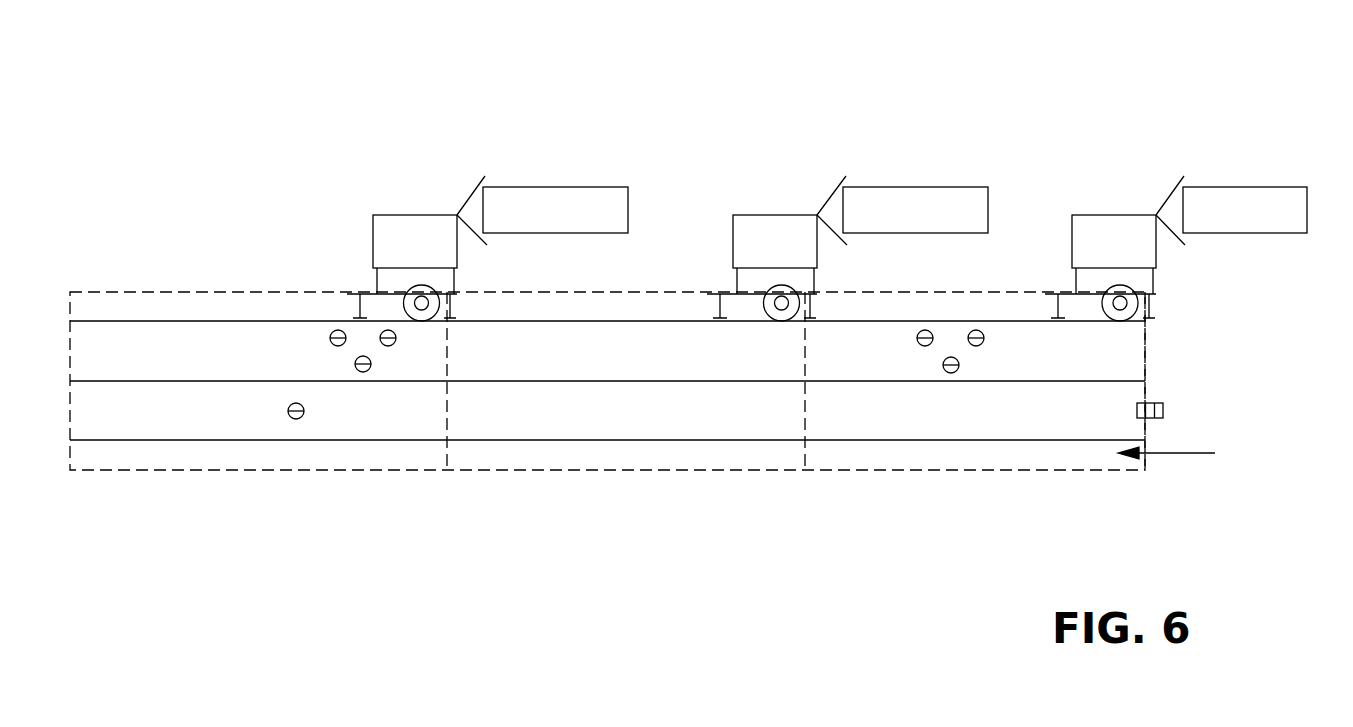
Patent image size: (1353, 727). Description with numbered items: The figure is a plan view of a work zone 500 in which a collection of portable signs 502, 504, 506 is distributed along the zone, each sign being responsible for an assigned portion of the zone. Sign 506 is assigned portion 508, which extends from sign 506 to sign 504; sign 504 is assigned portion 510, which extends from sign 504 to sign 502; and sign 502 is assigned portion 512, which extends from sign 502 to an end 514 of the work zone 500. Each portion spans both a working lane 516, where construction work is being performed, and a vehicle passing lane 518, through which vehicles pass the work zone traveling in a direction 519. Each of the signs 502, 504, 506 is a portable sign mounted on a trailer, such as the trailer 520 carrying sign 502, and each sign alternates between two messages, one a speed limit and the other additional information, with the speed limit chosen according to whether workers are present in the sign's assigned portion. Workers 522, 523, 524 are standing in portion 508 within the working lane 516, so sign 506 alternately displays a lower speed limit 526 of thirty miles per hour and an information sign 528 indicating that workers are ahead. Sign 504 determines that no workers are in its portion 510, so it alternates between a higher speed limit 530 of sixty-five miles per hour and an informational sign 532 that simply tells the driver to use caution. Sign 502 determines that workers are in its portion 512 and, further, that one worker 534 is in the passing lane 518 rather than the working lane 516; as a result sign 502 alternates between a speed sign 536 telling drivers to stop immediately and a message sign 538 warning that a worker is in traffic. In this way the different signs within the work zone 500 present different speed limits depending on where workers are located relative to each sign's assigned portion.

The work zone 500 is at (1087, 92).
The sign 502 is at (402, 212).
The sign 504 is at (768, 212).
The sign 506 is at (1100, 212).
The portion 508 is at (958, 465).
The portion 510 is at (635, 465).
The portion 512 is at (265, 457).
The end of work zone 514 is at (82, 292).
The working lane 516 is at (1153, 338).
The vehicle passing lane 518 is at (1145, 398).
The direction 519 is at (1165, 457).
The trailer 520 is at (347, 297).
The worker 522 is at (987, 338).
The worker 523 is at (915, 338).
The worker 524 is at (957, 372).
The lower speed limit 526 is at (1082, 218).
The information sign 528 is at (1212, 187).
The higher speed limit 530 is at (785, 215).
The informational sign 532 is at (937, 190).
The worker 534 is at (305, 417).
The speed sign 536 is at (428, 217).
The message sign 538 is at (545, 187).